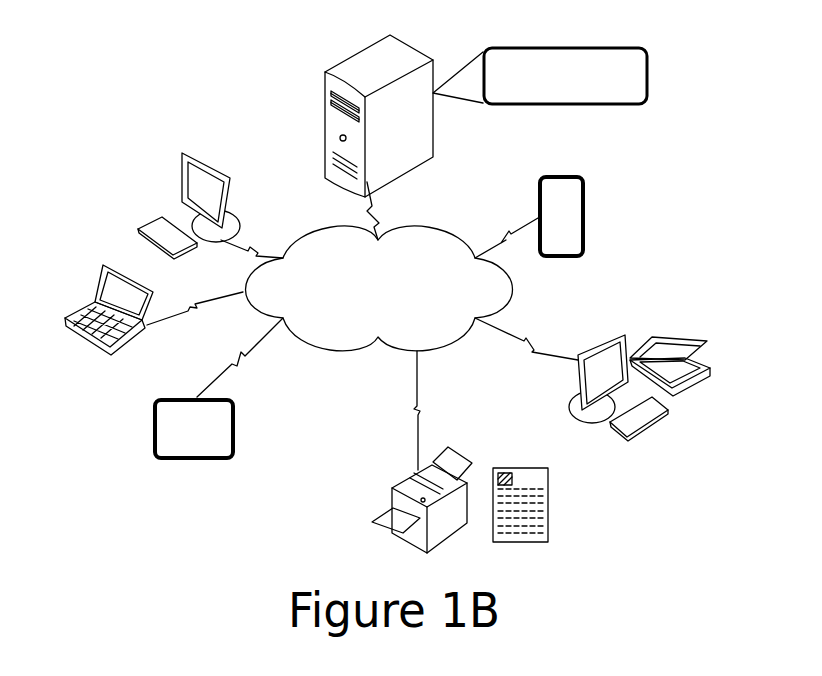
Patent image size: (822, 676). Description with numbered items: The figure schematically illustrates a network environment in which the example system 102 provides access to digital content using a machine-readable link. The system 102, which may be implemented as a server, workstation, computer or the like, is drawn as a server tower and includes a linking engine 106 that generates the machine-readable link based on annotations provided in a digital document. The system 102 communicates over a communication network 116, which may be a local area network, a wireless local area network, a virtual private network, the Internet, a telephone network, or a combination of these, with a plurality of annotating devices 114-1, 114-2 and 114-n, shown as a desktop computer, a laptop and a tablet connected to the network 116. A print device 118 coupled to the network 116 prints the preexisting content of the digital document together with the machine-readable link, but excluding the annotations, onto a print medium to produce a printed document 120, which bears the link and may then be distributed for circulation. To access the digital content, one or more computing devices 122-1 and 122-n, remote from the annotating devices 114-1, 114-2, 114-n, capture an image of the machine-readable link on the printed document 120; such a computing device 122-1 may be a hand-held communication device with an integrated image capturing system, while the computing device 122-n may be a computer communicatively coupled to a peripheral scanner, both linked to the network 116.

The system 102 is at (410, 43).
The linking engine 106 is at (540, 76).
The device 114-1 is at (182, 153).
The device 114-2 is at (103, 265).
The device 114-n is at (158, 460).
The communication network 116 is at (379, 288).
The print device 118 is at (395, 487).
The printed document 120 is at (550, 508).
The computing device 122-1 is at (582, 175).
The computing device 122-n is at (708, 343).